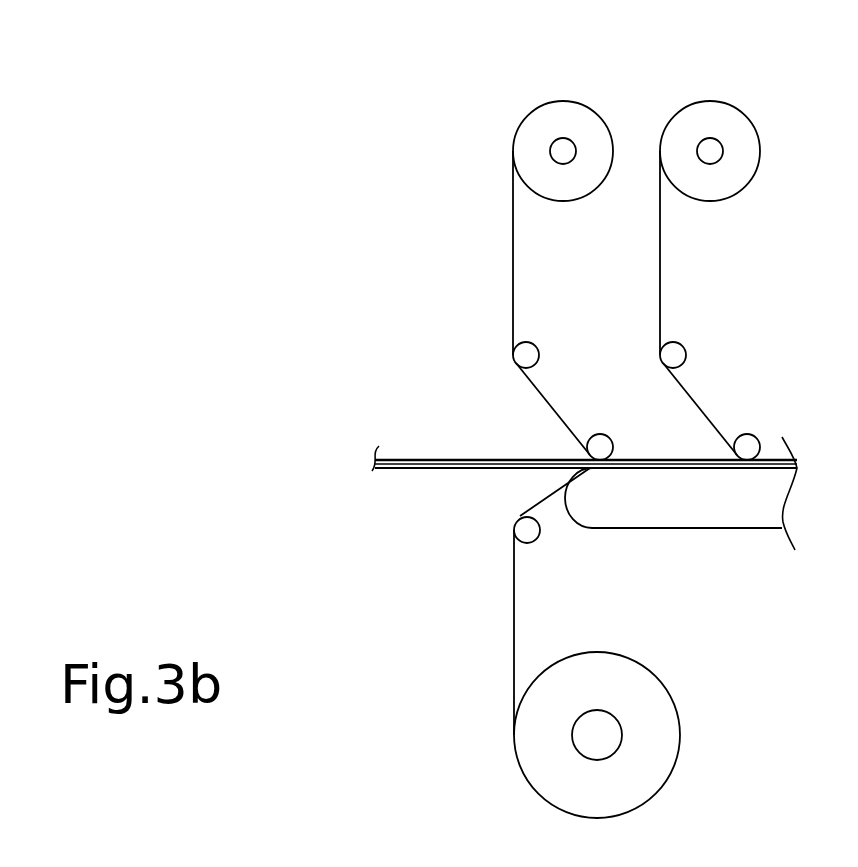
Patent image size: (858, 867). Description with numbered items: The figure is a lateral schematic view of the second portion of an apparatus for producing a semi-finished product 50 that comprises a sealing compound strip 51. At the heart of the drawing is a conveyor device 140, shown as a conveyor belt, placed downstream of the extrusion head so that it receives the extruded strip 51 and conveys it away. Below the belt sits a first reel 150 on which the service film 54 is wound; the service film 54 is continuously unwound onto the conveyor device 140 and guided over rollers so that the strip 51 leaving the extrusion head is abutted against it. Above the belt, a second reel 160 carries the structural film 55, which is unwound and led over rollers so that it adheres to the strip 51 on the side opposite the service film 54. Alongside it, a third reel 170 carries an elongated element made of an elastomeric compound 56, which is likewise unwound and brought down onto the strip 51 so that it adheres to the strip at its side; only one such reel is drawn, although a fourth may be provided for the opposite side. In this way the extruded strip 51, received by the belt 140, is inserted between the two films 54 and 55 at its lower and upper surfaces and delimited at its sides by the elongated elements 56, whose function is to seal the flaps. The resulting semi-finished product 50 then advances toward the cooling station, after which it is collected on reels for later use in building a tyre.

The second reel 160 is at (514, 130).
The third reel 170 is at (757, 117).
The structural film 55 is at (513, 257).
The elongated element of elastomeric compound 56 is at (660, 258).
The sealing compound strip 51 is at (448, 459).
The semi-finished product 50 is at (770, 458).
The conveyor device 140 is at (699, 544).
The service film 54 is at (513, 662).
The first reel 150 is at (672, 784).